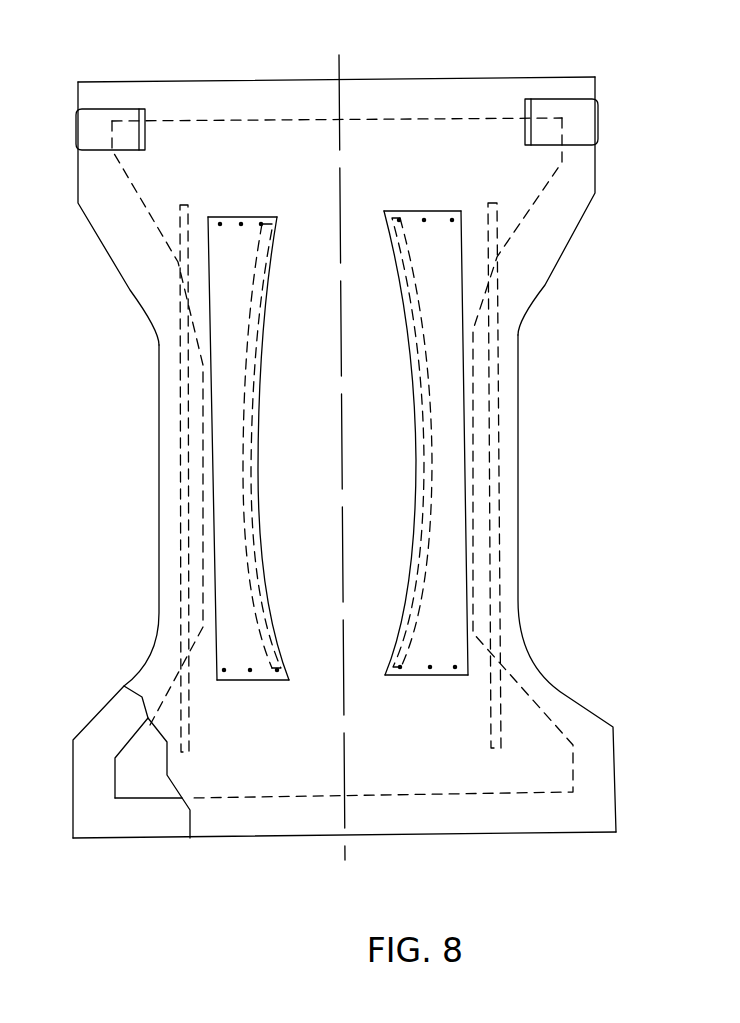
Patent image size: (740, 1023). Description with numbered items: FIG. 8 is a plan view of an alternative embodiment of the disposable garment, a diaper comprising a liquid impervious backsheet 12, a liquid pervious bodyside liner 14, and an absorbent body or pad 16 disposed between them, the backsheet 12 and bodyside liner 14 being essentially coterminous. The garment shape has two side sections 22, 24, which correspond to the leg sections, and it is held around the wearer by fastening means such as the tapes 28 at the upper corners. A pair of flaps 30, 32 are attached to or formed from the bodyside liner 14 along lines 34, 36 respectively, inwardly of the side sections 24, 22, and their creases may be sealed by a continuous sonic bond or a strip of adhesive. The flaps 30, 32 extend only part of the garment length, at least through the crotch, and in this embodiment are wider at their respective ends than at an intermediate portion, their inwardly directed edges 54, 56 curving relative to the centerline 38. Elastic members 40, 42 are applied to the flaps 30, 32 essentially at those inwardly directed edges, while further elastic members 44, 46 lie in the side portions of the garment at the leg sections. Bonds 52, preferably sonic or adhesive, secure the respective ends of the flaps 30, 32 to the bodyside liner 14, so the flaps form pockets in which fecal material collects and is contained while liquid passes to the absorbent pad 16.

The backsheet 12 is at (88, 820).
The bodyside liner 14 is at (227, 822).
The absorbent body or pad 16 is at (143, 788).
The side section 22 is at (160, 600).
The side section 24 is at (522, 567).
The tapes 28 is at (78, 128).
The flap 30 is at (475, 443).
The flap 32 is at (203, 448).
The line 34 is at (464, 355).
The line 36 is at (209, 367).
The centerline 38 is at (339, 70).
The elastic member 40 is at (424, 465).
The elastic member 42 is at (253, 468).
The elastic member 44 is at (500, 497).
The elastic member 46 is at (180, 548).
The bonds 52 is at (261, 222).
The inwardly directed edge 54 is at (412, 348).
The inwardly directed edge 56 is at (264, 356).